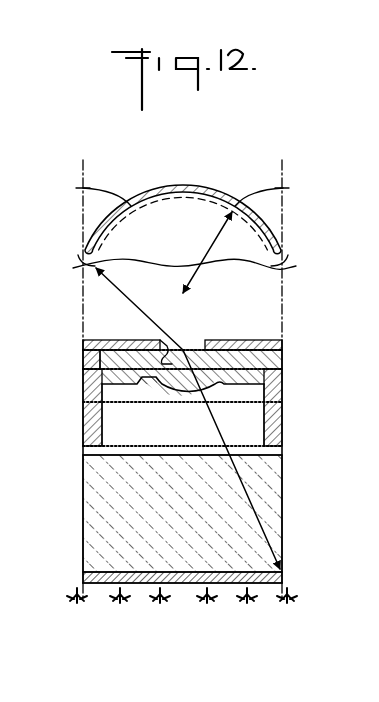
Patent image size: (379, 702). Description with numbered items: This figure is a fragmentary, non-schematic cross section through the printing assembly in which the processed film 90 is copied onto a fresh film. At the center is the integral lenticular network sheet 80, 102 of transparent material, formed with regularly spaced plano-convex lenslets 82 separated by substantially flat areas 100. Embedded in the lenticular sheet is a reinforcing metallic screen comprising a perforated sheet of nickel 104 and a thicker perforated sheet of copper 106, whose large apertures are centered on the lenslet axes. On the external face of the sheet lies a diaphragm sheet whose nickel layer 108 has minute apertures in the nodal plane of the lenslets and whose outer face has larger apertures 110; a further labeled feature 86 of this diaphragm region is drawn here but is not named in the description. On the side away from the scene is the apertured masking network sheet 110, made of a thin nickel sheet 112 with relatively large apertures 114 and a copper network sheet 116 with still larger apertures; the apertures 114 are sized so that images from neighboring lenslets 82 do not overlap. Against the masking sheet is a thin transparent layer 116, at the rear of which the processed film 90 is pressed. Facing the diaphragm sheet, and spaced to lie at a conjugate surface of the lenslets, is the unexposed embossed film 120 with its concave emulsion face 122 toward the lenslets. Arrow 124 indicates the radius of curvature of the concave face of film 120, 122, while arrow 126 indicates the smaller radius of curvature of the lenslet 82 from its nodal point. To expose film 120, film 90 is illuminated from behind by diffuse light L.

The lenticular network sheet 80 is at (82, 377).
The lenslets 82 is at (162, 400).
The aperture 86 is at (187, 347).
The radiation sensitive film 90 is at (232, 580).
The flat areas 100 is at (213, 418).
The sheet 102 is at (284, 360).
The perforated sheet of nickel 104 is at (284, 377).
The perforated sheet of copper 106 is at (284, 370).
The nickel layer 108 is at (284, 347).
The apertured masking network sheet 110 is at (242, 340).
The nickel sheet 112 is at (276, 462).
The apertures 114 is at (160, 453).
The transparent layer 116 is at (287, 426).
The embossed film 120 is at (225, 194).
The emulsion face 122 is at (256, 242).
The radius of curvature arrow 124 is at (216, 236).
The radius of curvature arrow 126 is at (147, 352).
The diffuse light L is at (291, 613).